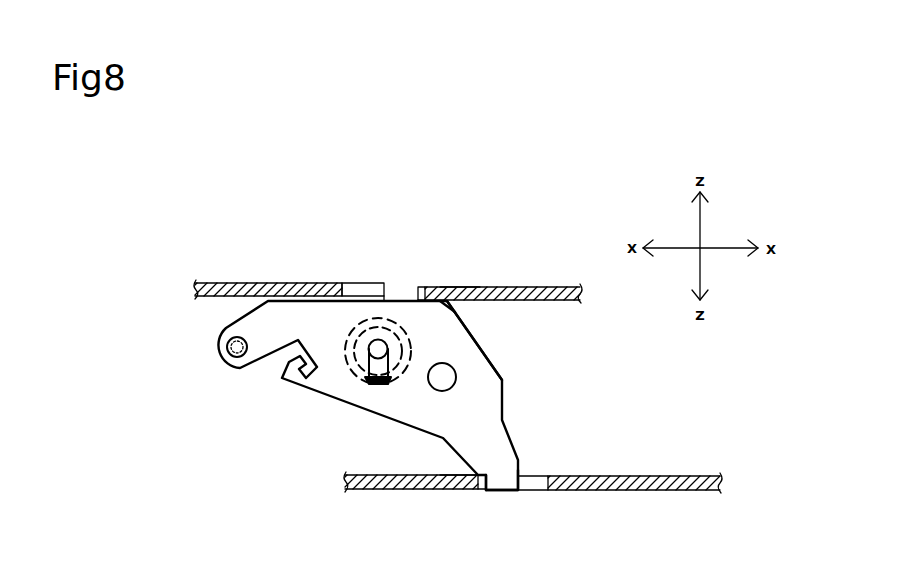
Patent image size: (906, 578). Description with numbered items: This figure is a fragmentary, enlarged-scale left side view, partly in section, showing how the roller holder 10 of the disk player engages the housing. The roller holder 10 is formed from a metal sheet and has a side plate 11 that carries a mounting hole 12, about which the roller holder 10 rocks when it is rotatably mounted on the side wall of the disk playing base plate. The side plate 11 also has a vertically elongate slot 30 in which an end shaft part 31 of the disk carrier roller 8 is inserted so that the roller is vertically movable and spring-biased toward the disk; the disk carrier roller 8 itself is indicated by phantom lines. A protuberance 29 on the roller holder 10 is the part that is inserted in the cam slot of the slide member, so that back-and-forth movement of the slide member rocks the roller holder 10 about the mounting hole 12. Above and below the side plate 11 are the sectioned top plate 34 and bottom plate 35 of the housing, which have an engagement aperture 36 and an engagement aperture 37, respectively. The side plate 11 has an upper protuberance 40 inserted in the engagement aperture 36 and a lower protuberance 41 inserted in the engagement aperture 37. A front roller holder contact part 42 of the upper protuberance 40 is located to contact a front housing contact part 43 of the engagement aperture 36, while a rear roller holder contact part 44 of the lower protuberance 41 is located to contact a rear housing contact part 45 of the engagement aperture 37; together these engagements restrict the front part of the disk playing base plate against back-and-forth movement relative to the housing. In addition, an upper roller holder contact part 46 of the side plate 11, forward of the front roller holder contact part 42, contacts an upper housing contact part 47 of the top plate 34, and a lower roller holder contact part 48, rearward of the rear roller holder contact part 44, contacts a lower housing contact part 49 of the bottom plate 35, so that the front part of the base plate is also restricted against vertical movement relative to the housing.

The disk carrier roller 8 is at (347, 360).
The roller holder 10 is at (514, 392).
The side plate 11 is at (478, 368).
The mounting hole 12 is at (440, 373).
The protuberance 29 is at (229, 357).
The vertically elongate slot 30 is at (370, 363).
The end shaft part 31 is at (378, 349).
The top plate 34 is at (270, 282).
The bottom plate 35 is at (613, 490).
The engagement aperture 36 is at (353, 288).
The engagement aperture 37 is at (545, 483).
The upper protuberance 40 is at (397, 293).
The lower protuberance 41 is at (502, 478).
The front roller holder contact part 42 is at (420, 291).
The front housing contact part 43 is at (433, 293).
The rear roller holder contact part 44 is at (486, 490).
The rear housing contact part 45 is at (478, 490).
The upper roller holder contact part 46 is at (458, 288).
The upper housing contact part 47 is at (452, 301).
The lower roller holder contact part 48 is at (470, 487).
The lower housing contact part 49 is at (474, 474).